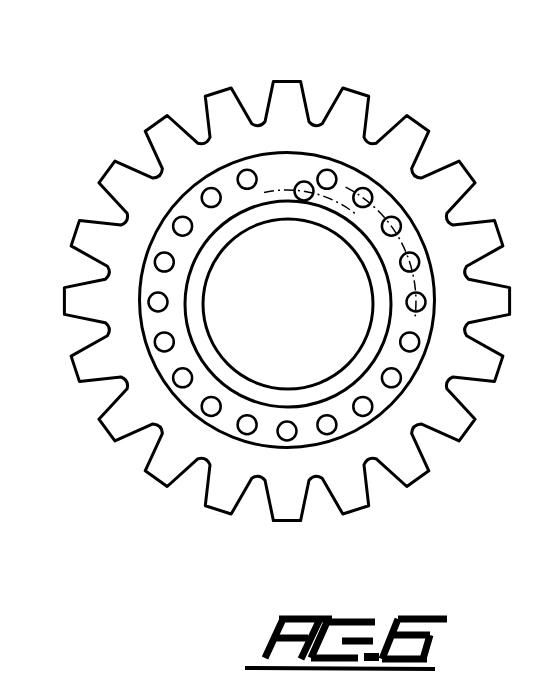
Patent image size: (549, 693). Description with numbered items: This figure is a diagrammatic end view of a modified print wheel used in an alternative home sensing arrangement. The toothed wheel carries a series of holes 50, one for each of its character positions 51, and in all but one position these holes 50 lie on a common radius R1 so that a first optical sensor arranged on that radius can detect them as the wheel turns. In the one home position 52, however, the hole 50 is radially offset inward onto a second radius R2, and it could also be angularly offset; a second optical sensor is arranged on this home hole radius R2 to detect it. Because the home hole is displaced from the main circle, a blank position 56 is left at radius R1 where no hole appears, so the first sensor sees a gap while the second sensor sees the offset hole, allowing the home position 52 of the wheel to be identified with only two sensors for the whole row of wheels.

The holes 50 is at (239, 175).
The character positions 51 is at (100, 175).
The home position 52 is at (303, 182).
The blank position 56 is at (298, 168).
The common radius R1 is at (411, 288).
The home hole radius R2 is at (330, 203).